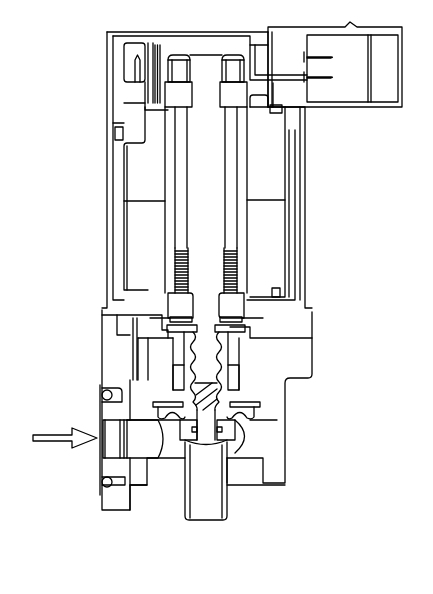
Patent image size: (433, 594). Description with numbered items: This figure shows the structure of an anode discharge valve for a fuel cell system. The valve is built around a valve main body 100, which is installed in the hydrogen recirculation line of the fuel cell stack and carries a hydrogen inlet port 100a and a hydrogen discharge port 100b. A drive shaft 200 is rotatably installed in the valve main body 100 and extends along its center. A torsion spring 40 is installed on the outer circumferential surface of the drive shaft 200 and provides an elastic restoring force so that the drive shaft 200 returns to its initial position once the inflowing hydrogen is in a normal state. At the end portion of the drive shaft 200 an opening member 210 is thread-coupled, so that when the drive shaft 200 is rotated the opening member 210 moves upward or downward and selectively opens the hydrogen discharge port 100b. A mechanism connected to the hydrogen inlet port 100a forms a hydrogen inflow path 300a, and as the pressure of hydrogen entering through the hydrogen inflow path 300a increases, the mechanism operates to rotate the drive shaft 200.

The valve main body 100 is at (118, 91).
The hydrogen inlet port 100a is at (115, 445).
The hydrogen discharge port 100b is at (227, 502).
The drive shaft 200 is at (198, 223).
The torsion spring 40 is at (185, 290).
The opening member 210 is at (222, 401).
The hydrogen inflow path 300a is at (133, 330).